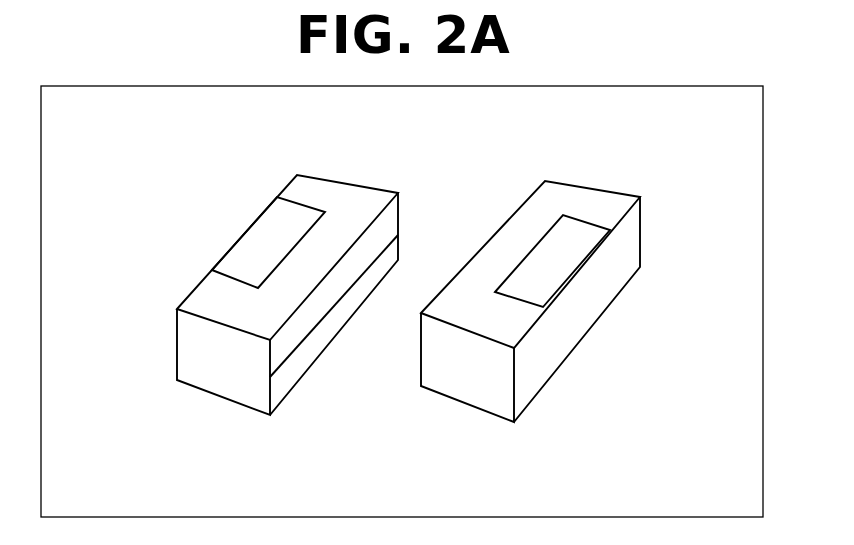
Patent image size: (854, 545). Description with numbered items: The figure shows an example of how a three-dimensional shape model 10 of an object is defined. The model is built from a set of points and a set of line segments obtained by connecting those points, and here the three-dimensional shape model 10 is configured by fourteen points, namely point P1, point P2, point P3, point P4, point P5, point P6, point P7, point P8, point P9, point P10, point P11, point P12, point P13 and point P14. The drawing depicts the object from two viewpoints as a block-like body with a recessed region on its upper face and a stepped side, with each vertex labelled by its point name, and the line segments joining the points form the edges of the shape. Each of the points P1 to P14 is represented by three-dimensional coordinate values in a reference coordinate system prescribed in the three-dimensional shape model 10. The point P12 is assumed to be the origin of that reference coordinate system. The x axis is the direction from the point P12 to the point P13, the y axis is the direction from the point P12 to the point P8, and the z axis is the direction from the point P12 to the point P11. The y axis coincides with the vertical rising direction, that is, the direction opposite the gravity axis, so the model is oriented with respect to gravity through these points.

The three-dimensional shape model 10 is at (213, 383).
The point P1 is at (405, 248).
The point P2 is at (407, 258).
The point P3 is at (414, 257).
The point P4 is at (409, 254).
The point P5 is at (410, 261).
The point P6 is at (398, 262).
The point P7 is at (402, 247).
The point P8 is at (398, 261).
The point P9 is at (252, 385).
The point P10 is at (423, 228).
The point P11 is at (410, 325).
The point P12 is at (273, 440).
The point P13 is at (410, 330).
The point P14 is at (516, 438).